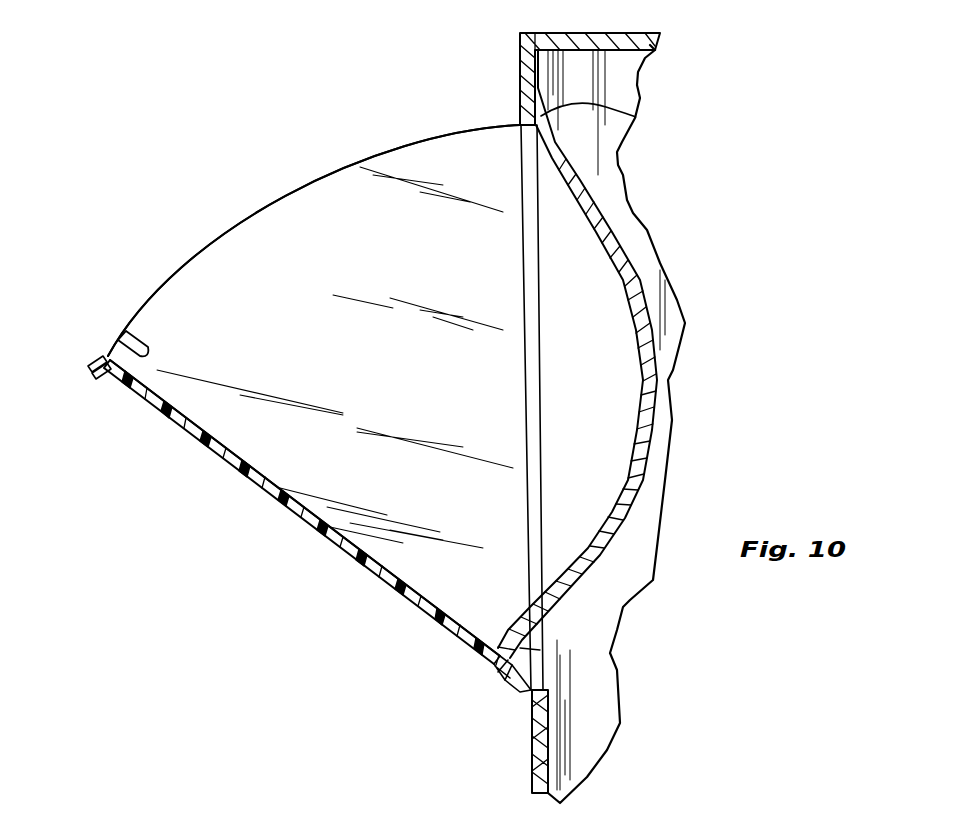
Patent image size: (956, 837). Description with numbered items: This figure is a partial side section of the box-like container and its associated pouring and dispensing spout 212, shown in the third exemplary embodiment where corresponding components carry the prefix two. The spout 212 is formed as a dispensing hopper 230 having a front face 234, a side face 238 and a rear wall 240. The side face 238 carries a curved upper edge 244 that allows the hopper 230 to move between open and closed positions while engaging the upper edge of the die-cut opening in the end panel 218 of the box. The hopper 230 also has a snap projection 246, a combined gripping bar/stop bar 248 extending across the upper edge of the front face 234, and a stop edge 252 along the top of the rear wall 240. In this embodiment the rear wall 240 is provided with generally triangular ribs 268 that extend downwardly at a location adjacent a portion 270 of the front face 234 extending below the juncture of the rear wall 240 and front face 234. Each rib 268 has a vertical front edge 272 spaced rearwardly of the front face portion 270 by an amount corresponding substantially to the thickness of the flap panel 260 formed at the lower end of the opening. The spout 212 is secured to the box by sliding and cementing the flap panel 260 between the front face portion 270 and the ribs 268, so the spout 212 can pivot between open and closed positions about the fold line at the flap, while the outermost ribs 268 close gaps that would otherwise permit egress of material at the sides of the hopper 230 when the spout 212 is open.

The spout 212 is at (277, 508).
The end panel 218 is at (622, 32).
The hopper 230 is at (432, 138).
The front face 234 is at (203, 448).
The side face 238 is at (303, 218).
The rear wall 240 is at (643, 482).
The curved upper edge 244 is at (240, 224).
The snap projection 246 is at (150, 352).
The gripping bar/stop bar 248 is at (97, 374).
The stop edge 252 is at (635, 117).
The flap panel 260 is at (492, 672).
The triangular rib 268 is at (533, 655).
The portion of front face 270 is at (513, 680).
The vertical front edge 272 is at (527, 703).